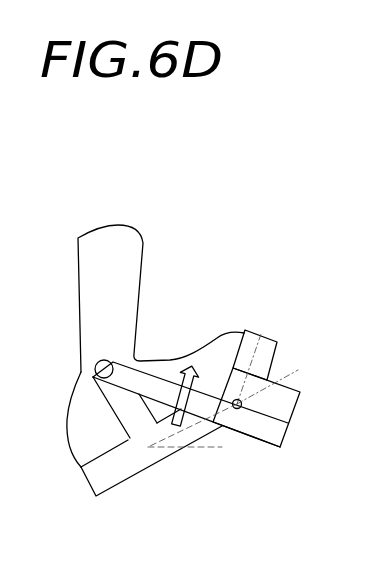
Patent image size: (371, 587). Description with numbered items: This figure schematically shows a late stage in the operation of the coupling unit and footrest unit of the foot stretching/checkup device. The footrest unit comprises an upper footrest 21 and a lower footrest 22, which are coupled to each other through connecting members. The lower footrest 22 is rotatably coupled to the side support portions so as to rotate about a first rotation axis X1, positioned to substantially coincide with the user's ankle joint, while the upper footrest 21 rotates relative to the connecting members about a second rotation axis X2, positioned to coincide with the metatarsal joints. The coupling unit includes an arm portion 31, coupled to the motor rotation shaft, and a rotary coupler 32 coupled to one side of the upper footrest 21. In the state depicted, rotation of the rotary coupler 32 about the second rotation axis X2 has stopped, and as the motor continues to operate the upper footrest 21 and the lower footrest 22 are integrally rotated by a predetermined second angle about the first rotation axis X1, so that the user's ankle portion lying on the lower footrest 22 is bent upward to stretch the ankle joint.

The upper footrest 21 is at (268, 347).
The lower footrest 22 is at (123, 477).
The arm portion 31 is at (280, 435).
The rotary coupler 32 is at (288, 407).
The first rotation axis X1 is at (104, 369).
The second rotation axis X2 is at (237, 409).